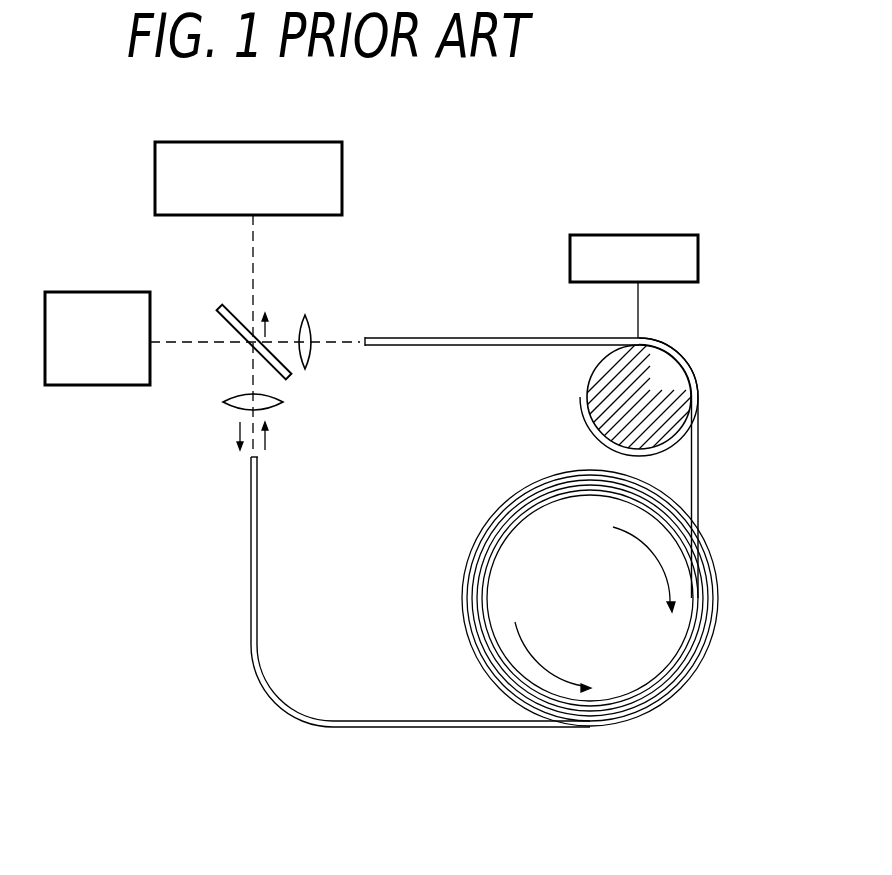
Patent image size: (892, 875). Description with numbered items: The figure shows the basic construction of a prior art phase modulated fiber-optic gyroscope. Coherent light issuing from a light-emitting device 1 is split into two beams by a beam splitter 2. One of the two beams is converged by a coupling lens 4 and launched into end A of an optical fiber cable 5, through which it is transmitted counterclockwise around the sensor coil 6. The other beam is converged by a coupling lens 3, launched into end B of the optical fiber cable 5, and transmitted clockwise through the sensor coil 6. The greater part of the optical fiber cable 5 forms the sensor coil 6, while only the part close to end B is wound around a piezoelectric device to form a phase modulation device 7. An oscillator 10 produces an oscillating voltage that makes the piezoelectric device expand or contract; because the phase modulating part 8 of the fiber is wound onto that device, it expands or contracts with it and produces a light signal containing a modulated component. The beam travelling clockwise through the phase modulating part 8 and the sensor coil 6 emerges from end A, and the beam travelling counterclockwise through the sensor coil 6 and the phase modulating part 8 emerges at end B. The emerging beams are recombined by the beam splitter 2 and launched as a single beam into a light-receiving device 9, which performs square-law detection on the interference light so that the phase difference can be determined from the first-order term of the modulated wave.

The light-emitting device 1 is at (112, 292).
The beam splitter 2 is at (226, 322).
The coupling lens 3 is at (306, 338).
The coupling lens 4 is at (283, 402).
The optical fiber cable 5 is at (420, 721).
The sensor coil 6 is at (500, 532).
The phase modulation device 7 is at (676, 385).
The phase modulating part 8 is at (579, 381).
The light-receiving device 9 is at (300, 142).
The oscillator 10 is at (690, 233).
The end A of the optical fiber cable A is at (256, 457).
The end B of the optical fiber cable B is at (367, 347).